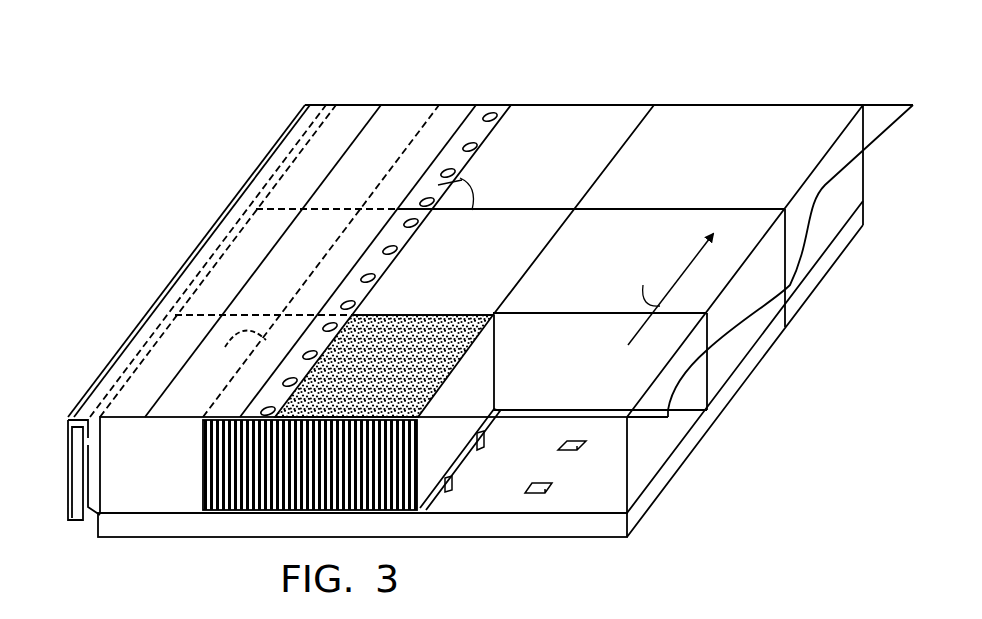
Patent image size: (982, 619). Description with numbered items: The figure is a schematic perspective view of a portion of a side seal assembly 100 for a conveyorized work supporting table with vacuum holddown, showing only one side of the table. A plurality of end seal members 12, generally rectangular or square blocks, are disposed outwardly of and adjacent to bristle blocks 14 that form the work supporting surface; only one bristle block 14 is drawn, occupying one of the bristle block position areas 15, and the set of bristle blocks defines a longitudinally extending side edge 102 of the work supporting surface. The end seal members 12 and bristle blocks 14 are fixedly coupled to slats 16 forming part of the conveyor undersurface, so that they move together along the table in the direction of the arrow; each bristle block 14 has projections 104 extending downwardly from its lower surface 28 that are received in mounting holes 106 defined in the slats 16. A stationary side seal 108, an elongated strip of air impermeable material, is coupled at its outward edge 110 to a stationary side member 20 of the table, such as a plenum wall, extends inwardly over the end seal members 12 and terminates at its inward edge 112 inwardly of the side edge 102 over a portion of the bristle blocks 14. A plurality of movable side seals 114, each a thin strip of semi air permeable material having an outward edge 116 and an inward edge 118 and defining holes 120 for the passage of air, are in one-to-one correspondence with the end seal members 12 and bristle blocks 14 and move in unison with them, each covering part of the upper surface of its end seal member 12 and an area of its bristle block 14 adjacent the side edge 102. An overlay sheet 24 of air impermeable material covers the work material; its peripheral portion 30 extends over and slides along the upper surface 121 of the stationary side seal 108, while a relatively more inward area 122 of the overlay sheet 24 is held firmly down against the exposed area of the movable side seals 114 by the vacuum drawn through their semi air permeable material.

The side seal assembly 100 is at (410, 66).
The end seal member 12 is at (312, 160).
The bristle block 14 is at (412, 327).
The bristle block position area 15 is at (687, 133).
The slat 16 is at (808, 287).
The stationary side member 20 is at (77, 507).
The overlay sheet 24 is at (747, 138).
The lower surface 28 is at (431, 498).
The peripheral portion 30 is at (295, 238).
The side edge 102 is at (439, 105).
The projection 104 is at (481, 437).
The mounting hole 106 is at (549, 486).
The stationary side seal 108 is at (124, 328).
The outward edge 110 is at (162, 291).
The inward edge 112 is at (362, 258).
The movable side seal 114 is at (420, 226).
The outward edge 116 is at (249, 348).
The inward edge 118 is at (455, 176).
The hole 120 is at (497, 125).
The upper surface 121 is at (356, 122).
The inward area 122 is at (457, 158).